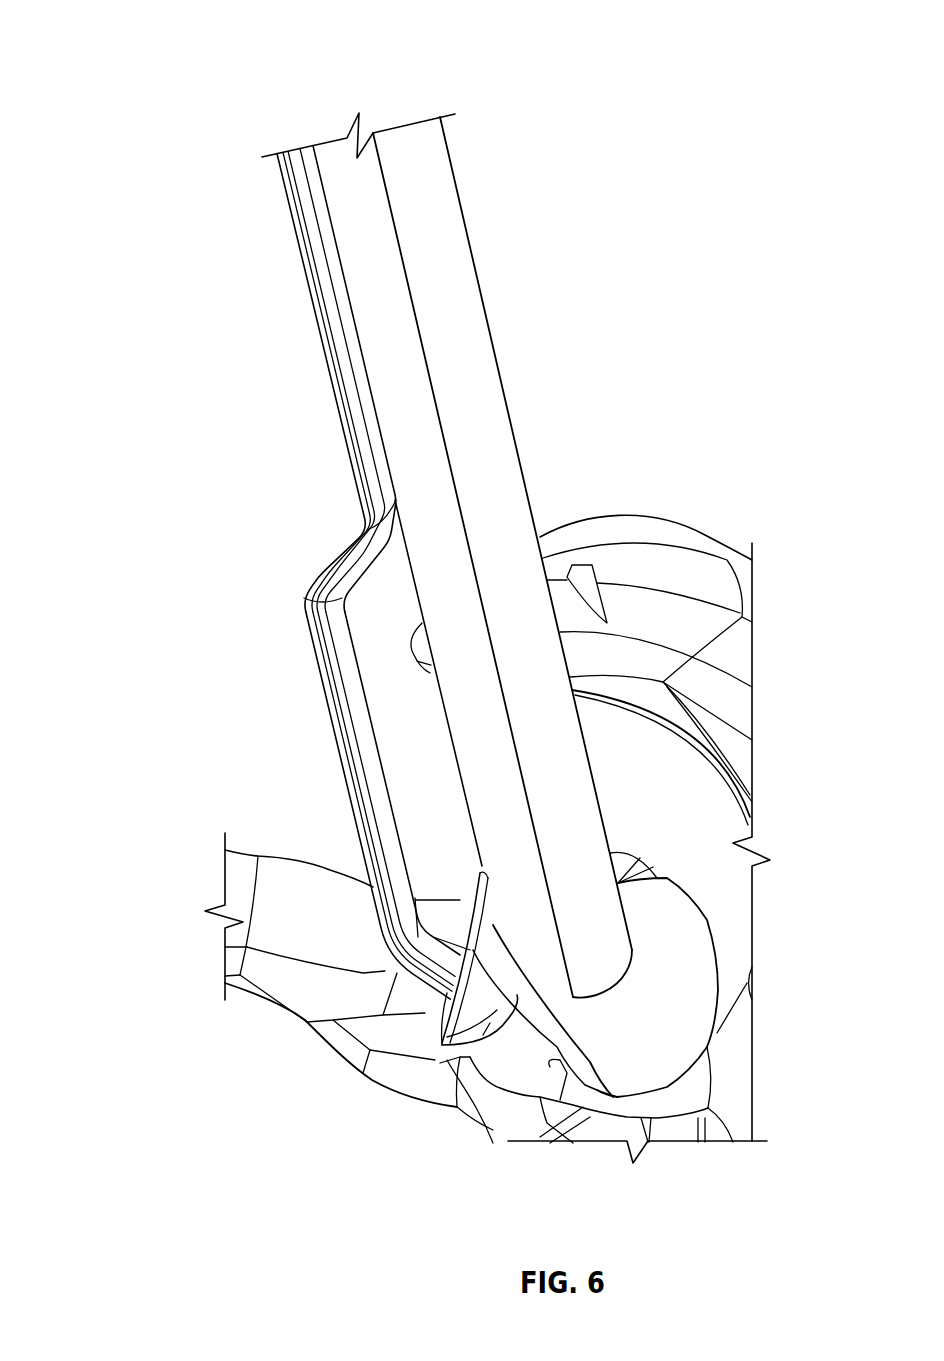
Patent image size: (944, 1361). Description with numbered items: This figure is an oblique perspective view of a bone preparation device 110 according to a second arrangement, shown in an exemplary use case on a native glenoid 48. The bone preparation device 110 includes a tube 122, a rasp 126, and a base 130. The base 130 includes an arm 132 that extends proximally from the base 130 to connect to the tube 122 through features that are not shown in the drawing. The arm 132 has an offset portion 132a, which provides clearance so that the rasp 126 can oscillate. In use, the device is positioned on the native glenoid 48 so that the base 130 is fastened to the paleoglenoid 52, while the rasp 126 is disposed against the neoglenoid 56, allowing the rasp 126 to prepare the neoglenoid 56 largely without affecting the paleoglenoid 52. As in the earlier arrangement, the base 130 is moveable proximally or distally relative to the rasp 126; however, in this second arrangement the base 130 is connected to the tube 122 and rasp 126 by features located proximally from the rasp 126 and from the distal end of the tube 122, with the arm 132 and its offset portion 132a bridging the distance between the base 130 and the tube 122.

The bone preparation device 110 is at (171, 66).
The tube 122 is at (543, 818).
The rasp 126 is at (705, 1043).
The base 130 is at (440, 1043).
The arm 132 is at (305, 280).
The offset portion 132a is at (335, 748).
The native glenoid 48 is at (785, 1163).
The paleoglenoid 52 is at (527, 1078).
The neoglenoid 56 is at (663, 1118).